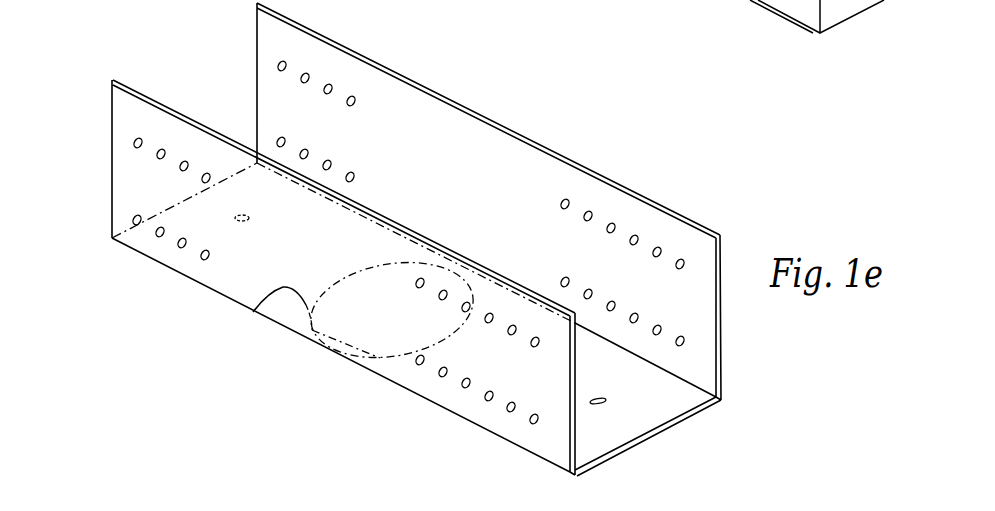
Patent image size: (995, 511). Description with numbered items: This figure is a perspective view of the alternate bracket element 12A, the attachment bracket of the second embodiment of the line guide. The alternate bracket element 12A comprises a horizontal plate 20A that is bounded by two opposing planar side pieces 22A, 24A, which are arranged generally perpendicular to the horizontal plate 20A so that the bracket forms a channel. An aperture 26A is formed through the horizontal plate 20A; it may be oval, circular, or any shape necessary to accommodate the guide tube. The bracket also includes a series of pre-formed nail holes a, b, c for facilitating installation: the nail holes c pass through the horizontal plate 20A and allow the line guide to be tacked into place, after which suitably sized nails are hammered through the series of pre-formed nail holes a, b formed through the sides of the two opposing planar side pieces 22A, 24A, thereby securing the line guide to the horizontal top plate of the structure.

The alternate bracket element 12A is at (553, 125).
The horizontal plate 20A is at (652, 433).
The planar side piece 22A is at (650, 195).
The planar side piece 24A is at (568, 425).
The aperture 26A is at (253, 315).
The pre-formed nail holes a is at (347, 101).
The pre-formed nail holes b is at (202, 179).
The pre-formed nail holes c is at (607, 402).